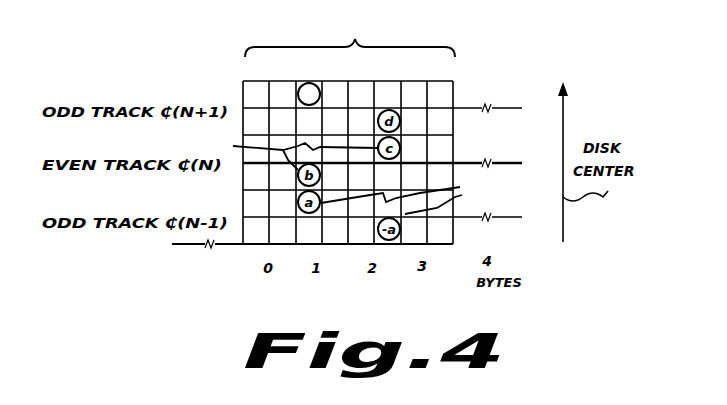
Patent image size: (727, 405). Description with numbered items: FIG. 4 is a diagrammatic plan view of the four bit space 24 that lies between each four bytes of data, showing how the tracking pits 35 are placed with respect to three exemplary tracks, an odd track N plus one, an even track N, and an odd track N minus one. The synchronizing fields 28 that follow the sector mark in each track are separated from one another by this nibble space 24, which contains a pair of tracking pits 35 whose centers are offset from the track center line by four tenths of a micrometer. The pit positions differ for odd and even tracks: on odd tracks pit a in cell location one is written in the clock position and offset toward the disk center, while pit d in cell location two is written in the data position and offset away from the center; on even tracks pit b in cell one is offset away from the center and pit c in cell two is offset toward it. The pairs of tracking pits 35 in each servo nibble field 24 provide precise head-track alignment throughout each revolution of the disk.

The four bit (nibble) space 24 is at (350, 46).
The synchronizing field 28 is at (506, 106).
The tracking pits 35 is at (343, 170).